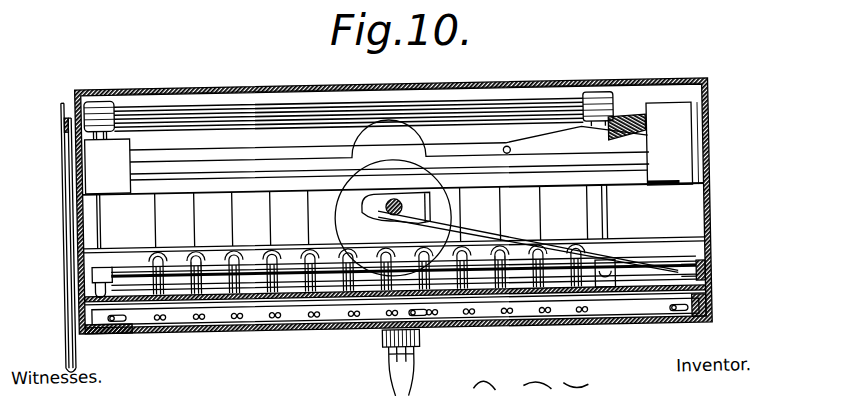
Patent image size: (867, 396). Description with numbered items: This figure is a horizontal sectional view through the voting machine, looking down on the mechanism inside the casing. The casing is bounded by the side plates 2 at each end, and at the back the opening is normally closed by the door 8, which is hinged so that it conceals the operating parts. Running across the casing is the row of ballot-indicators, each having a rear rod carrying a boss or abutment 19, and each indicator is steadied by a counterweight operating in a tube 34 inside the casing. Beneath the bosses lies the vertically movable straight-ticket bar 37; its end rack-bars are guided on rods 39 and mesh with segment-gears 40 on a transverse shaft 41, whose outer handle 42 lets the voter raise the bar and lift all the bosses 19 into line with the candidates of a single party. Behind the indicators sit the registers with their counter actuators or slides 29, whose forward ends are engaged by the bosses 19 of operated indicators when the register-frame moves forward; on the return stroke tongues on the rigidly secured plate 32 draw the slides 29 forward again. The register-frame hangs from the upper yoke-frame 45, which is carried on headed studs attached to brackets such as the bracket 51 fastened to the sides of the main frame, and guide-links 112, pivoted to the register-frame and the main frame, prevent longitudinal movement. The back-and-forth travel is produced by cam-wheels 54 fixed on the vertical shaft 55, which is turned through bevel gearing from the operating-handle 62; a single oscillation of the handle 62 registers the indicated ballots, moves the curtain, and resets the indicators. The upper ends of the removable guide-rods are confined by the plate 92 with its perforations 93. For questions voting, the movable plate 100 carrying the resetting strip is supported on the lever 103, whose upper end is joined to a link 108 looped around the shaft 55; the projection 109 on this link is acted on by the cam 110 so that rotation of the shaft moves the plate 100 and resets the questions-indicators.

The side plate 2 is at (77, 181).
The door 8 is at (500, 89).
The boss or abutment 19 is at (197, 291).
The counter actuator or slide 29 is at (194, 210).
The plate 32 is at (655, 236).
The tube 34 is at (197, 247).
The straight-ticket bar 37 is at (283, 261).
The rod 39 is at (88, 284).
The segment-gear 40 is at (100, 227).
The shaft 41 is at (277, 105).
The handle 42 is at (63, 334).
The upper yoke-frame 45 is at (297, 157).
The bracket 51 is at (655, 143).
The cam-wheel 54 is at (393, 218).
The vertical shaft 55 is at (398, 201).
The operating-handle 62 is at (388, 357).
The plate 92 is at (291, 328).
The perforation 93 is at (547, 316).
The movable plate 100 is at (662, 297).
The lever 103 is at (710, 276).
The link 108 is at (433, 230).
The projection 109 is at (442, 199).
The cam 110 is at (367, 212).
The guide-link 112 is at (572, 142).